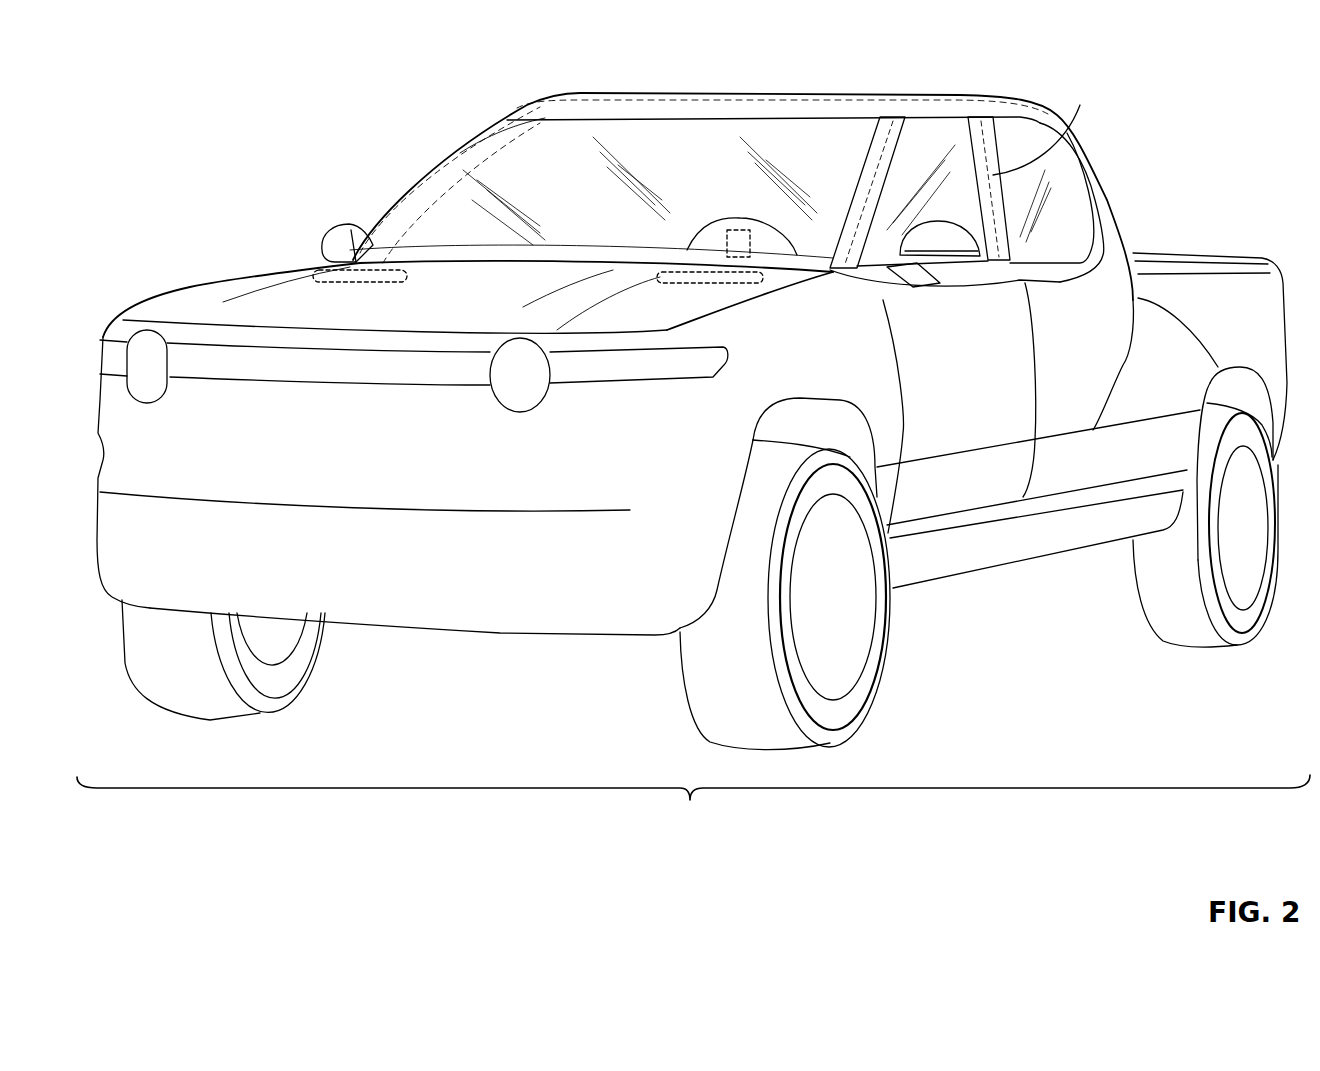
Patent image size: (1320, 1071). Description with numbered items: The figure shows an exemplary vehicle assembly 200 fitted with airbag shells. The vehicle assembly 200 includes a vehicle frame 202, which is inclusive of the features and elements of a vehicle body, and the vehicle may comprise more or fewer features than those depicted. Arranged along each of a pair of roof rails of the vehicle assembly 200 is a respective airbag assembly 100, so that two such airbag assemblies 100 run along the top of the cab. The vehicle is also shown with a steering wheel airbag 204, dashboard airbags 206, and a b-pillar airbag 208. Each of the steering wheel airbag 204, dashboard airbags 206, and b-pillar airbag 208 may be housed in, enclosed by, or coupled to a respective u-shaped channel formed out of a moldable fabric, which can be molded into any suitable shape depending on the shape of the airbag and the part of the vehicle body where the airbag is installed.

The airbag assembly 100 is at (453, 157).
The vehicle assembly 200 is at (158, 70).
The vehicle frame 202 is at (693, 808).
The steering wheel airbag 204 is at (733, 247).
The dashboard airbags 206 is at (683, 248).
The b-pillar airbag 208 is at (1080, 105).